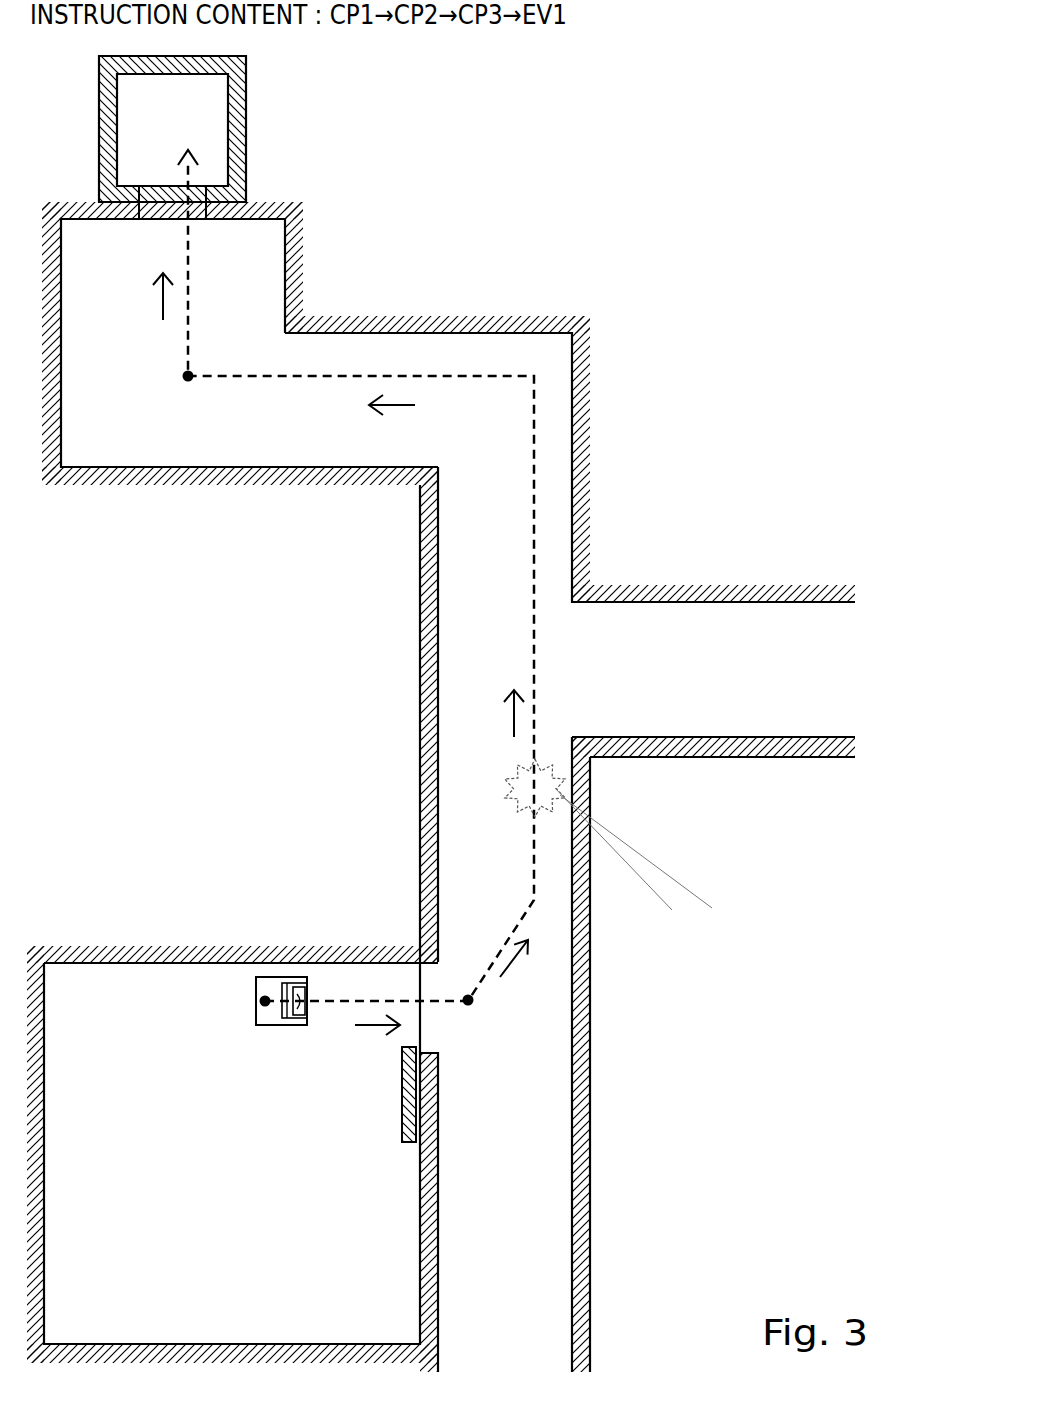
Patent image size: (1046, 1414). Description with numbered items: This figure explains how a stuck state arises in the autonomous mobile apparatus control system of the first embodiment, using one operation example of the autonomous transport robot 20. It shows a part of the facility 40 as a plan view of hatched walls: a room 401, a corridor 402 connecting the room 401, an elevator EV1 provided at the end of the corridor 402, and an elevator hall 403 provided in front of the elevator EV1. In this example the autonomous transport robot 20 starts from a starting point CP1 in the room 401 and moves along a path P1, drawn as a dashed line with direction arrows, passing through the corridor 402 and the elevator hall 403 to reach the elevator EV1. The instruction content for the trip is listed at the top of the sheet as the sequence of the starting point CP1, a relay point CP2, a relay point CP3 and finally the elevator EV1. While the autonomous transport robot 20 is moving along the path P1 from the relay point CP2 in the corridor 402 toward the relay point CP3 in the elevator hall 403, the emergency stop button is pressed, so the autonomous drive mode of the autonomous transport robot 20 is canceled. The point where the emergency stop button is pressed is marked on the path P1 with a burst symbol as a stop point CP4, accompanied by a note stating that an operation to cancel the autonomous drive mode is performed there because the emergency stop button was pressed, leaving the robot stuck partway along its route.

The facility 40 is at (441, 741).
The room 401 is at (133, 977).
The corridor 402 is at (557, 472).
The elevator hall 403 is at (268, 270).
The elevator EV1 is at (222, 120).
The path P1 is at (538, 402).
The autonomous transport robot 20 is at (273, 977).
The starting point CP1 is at (258, 1000).
The relay point CP2 is at (474, 997).
The relay point CP3 is at (188, 384).
The stop point CP4 is at (902, 1102).